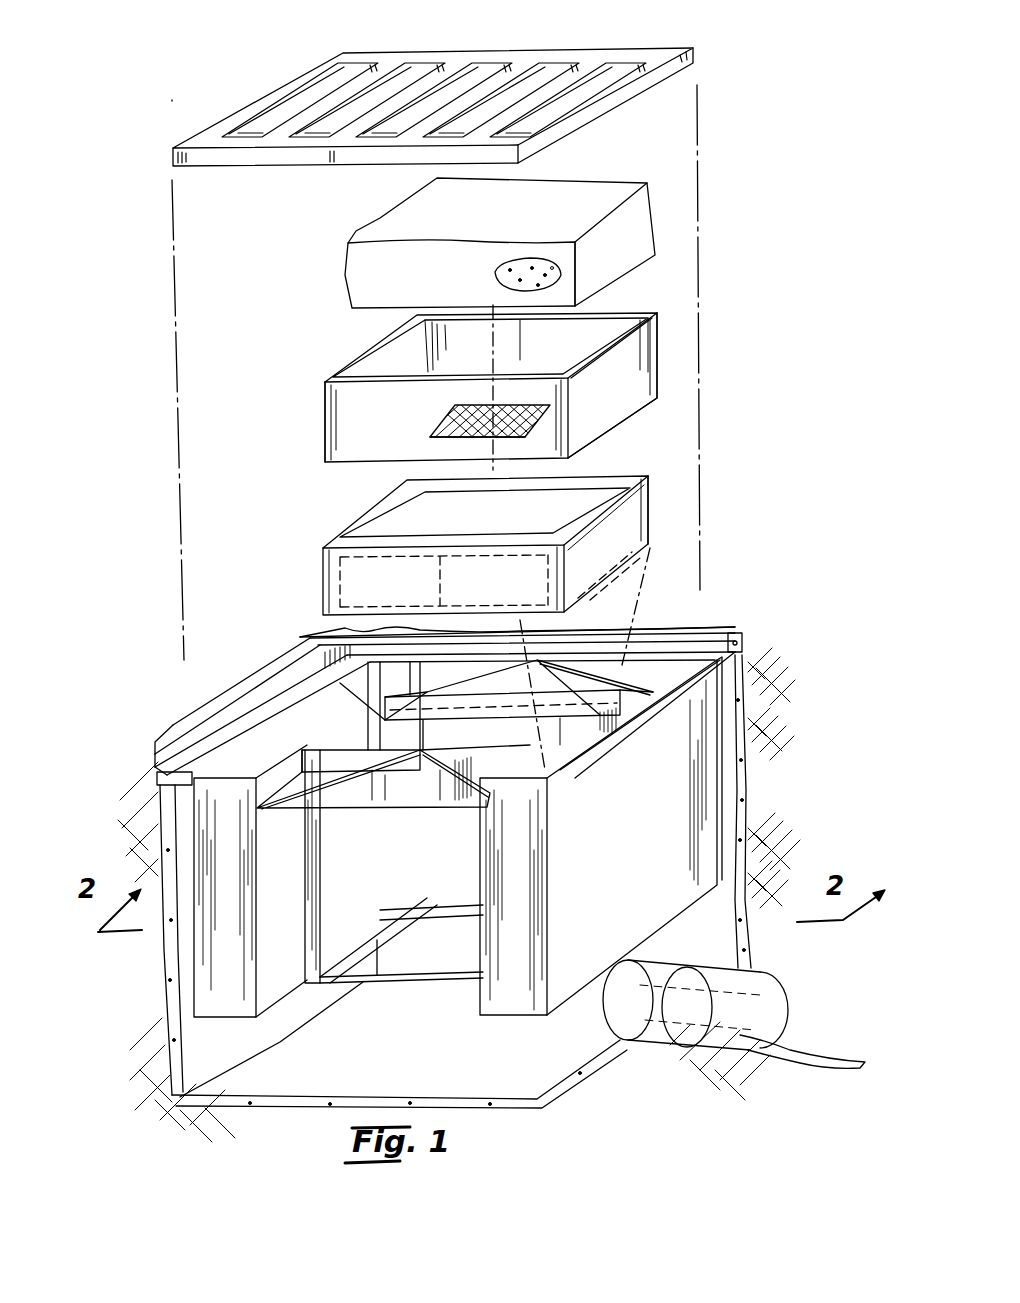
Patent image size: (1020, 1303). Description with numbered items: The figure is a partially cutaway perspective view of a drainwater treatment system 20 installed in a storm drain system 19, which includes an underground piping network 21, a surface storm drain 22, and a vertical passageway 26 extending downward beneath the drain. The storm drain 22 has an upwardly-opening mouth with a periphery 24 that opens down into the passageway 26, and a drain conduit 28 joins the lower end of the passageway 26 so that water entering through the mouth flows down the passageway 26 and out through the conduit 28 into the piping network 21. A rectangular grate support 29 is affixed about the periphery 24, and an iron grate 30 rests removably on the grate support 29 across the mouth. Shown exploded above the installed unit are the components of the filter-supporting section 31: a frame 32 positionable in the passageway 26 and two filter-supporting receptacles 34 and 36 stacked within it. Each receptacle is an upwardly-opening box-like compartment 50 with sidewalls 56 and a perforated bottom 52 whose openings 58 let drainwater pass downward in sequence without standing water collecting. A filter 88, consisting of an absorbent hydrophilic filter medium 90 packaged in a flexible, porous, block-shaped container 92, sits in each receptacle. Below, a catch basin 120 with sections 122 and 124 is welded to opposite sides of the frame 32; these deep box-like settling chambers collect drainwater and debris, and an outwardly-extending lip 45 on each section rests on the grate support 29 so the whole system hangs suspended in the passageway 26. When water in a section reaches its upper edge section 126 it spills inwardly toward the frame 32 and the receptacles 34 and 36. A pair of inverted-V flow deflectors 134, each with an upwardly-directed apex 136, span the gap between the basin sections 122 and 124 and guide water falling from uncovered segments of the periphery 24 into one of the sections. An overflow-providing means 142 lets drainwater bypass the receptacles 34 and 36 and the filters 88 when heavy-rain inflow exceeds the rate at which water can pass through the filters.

The storm drain system 19 is at (212, 112).
The iron grate 30 is at (488, 50).
The filter 88 is at (570, 172).
The filter medium 90 is at (495, 278).
The porous container 92 is at (612, 272).
The filter-supporting receptacle 34 is at (645, 355).
The sidewalls 56 is at (345, 403).
The box-like compartment 50 is at (660, 385).
The bottom 52 is at (450, 445).
The openings 58 is at (538, 445).
The filter-supporting receptacle 36 is at (650, 505).
The drainwater treatment system 20 is at (716, 556).
The storm drain 22 is at (680, 630).
The periphery 24 is at (595, 642).
The overflow-providing means 142 is at (746, 645).
The catch basin section 124 is at (742, 660).
The grate support 29 is at (283, 662).
The lip 45 is at (267, 735).
The catch basin section 122 is at (223, 752).
The catch basin 120 is at (243, 733).
The upper edge section 126 is at (347, 750).
The flow deflector 134 is at (650, 697).
The apex 136 is at (302, 763).
The vertical passageway 26 is at (205, 1030).
The filter-supporting section 31 is at (405, 982).
The frame 32 is at (455, 982).
The underground piping network 21 is at (738, 978).
The drain conduit 28 is at (666, 1030).